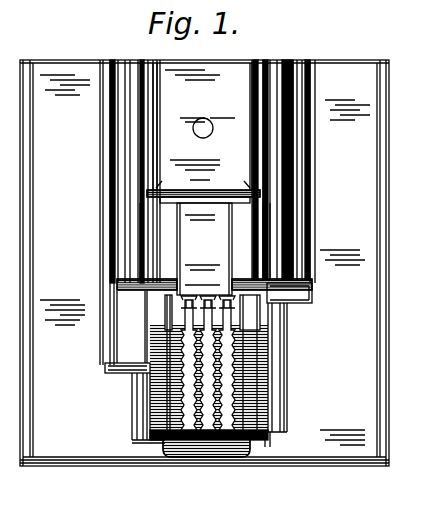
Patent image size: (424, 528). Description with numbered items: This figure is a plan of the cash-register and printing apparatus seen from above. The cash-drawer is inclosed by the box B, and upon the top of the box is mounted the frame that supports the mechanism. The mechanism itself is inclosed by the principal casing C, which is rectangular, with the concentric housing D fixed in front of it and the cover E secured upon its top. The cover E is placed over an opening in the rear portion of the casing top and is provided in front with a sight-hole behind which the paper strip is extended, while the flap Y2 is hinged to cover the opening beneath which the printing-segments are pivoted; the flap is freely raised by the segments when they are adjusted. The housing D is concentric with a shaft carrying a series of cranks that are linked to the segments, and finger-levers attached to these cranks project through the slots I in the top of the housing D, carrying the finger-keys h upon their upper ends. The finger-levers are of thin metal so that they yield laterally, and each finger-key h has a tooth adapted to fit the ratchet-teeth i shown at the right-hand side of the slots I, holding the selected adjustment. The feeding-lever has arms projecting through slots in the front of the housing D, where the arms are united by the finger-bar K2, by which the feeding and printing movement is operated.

The box B is at (204, 263).
The principal casing C is at (118, 221).
The cover E is at (203, 133).
The flap Y2 is at (204, 249).
The slots I is at (185, 328).
The finger-keys h is at (228, 323).
The ratchet-teeth i is at (230, 352).
The housing D is at (155, 412).
The finger-bar K2 is at (214, 457).